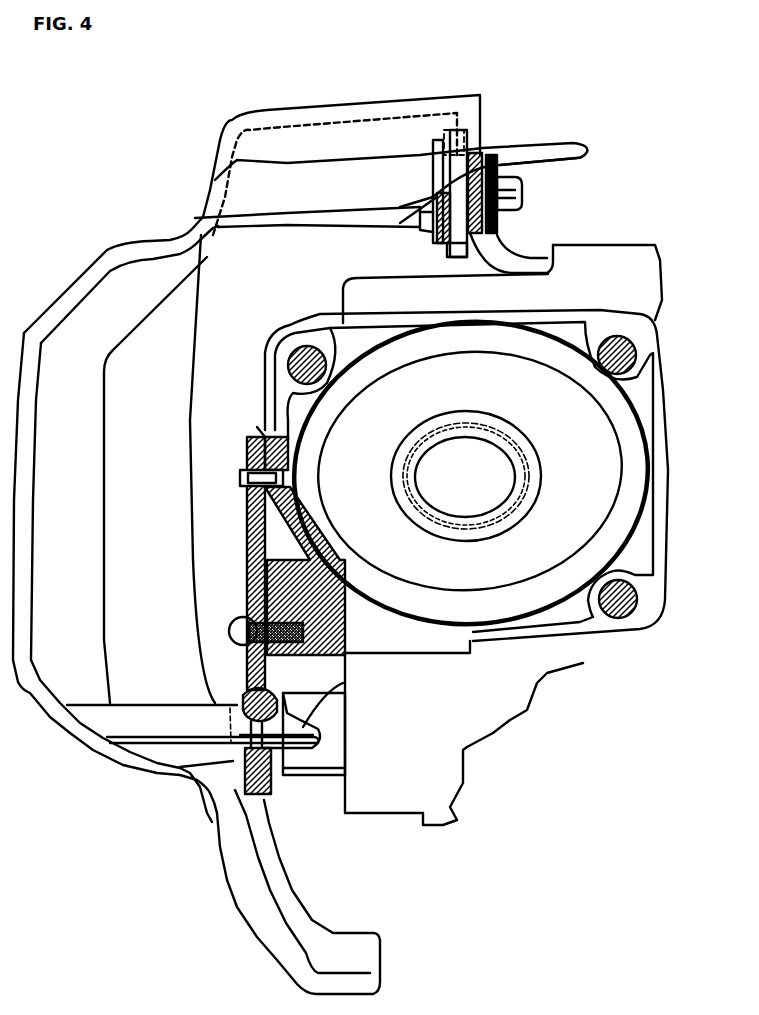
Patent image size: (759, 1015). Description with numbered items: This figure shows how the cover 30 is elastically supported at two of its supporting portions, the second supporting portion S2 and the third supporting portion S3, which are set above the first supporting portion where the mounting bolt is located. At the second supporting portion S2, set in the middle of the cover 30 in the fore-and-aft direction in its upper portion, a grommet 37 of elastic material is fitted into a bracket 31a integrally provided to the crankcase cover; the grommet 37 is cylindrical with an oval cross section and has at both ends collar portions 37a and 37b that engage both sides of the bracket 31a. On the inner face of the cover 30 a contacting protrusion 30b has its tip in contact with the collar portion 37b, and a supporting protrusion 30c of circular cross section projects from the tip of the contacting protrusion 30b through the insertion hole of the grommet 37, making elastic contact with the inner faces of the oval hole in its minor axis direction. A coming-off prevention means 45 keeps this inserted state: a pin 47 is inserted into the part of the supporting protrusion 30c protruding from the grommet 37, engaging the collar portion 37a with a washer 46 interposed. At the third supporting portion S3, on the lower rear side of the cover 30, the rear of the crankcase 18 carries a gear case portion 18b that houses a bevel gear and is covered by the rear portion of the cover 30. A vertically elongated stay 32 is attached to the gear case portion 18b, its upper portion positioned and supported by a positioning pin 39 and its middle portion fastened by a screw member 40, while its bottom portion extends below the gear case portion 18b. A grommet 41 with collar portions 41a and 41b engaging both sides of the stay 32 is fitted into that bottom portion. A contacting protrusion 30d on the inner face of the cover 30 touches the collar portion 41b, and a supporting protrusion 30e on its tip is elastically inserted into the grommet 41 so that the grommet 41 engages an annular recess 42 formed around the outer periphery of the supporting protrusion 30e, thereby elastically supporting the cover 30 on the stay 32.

The crankcase 18 is at (343, 302).
The gear case portion 18b is at (262, 425).
The cover 30 is at (63, 723).
The contacting protrusion 30b is at (320, 157).
The supporting protrusion 30c is at (515, 190).
The contacting protrusion 30d is at (247, 773).
The supporting protrusion 30e is at (345, 692).
The bracket 31a is at (447, 252).
The stay 32 is at (247, 553).
The grommet 37 is at (457, 130).
The collar portion 37a is at (473, 233).
The collar portion 37b is at (433, 228).
The positioning pin 39 is at (245, 468).
The screw member 40 is at (233, 631).
The grommet 41 is at (226, 843).
The collar portion 41a is at (267, 795).
The collar portion 41b is at (243, 703).
The annular recess 42 is at (283, 768).
The coming-off prevention means 45 is at (504, 222).
The washer 46 is at (553, 257).
The pin 47 is at (520, 200).
The second supporting portion S2 is at (504, 145).
The third supporting portion S3 is at (127, 772).